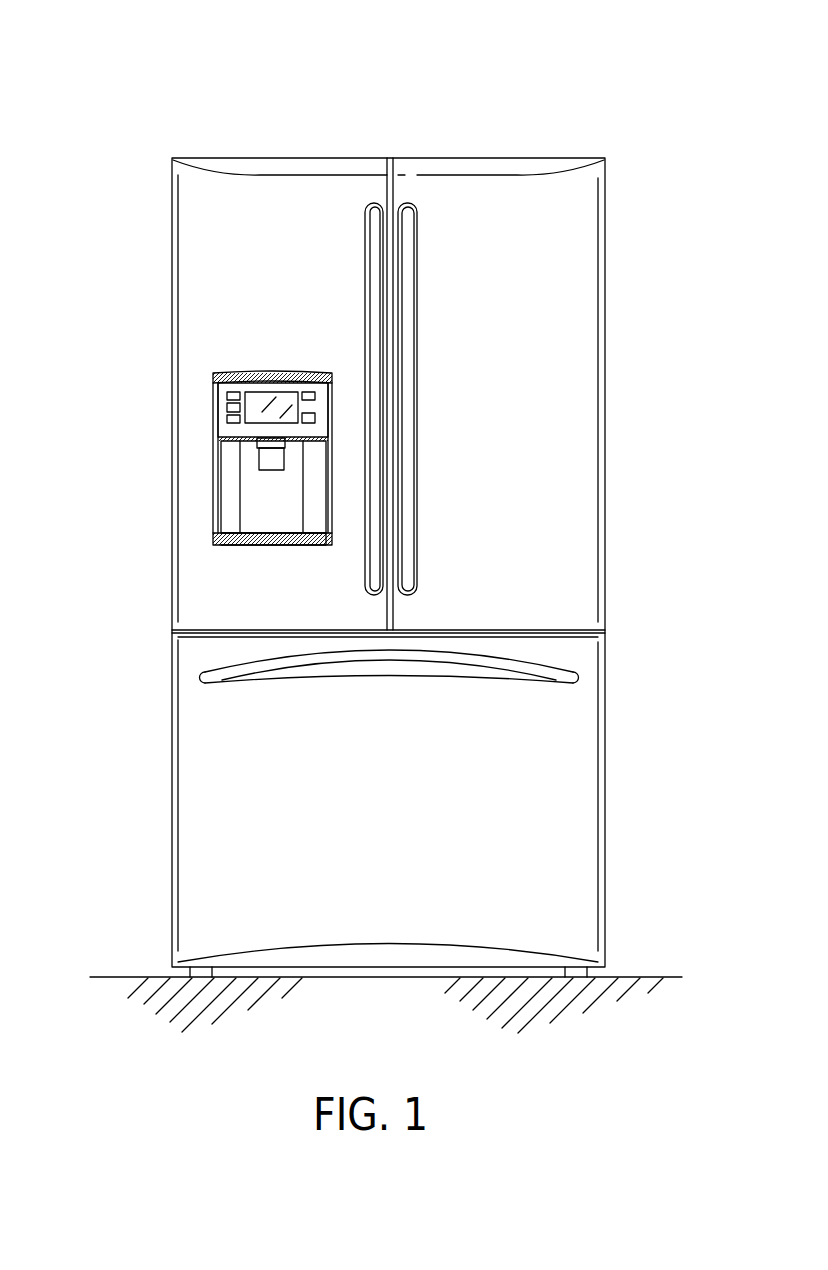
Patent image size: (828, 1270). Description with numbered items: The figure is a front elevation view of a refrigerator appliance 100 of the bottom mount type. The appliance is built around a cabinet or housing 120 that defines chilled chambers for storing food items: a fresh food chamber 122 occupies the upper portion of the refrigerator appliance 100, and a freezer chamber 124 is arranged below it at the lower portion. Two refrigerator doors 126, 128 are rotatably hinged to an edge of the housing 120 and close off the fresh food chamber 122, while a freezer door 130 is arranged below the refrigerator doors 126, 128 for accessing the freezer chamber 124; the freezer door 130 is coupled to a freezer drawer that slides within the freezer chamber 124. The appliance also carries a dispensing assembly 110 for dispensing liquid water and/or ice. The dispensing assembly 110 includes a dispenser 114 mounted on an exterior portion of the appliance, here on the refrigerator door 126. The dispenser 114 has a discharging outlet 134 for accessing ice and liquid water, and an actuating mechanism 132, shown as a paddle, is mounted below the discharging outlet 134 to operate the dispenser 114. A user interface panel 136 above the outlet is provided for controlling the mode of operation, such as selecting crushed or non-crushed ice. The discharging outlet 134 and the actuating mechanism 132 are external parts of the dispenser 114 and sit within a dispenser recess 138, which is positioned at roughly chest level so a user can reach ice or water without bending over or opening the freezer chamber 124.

The refrigerator appliance 100 is at (591, 80).
The dispensing assembly 110 is at (233, 355).
The dispenser 114 is at (268, 500).
The cabinet or housing 120 is at (170, 810).
The fresh food chamber 122 is at (567, 398).
The freezer chamber 124 is at (570, 750).
The refrigerator door 126 is at (198, 248).
The refrigerator door 128 is at (583, 288).
The freezer door 130 is at (577, 848).
The actuating mechanism 132 is at (268, 452).
The discharging outlet 134 is at (263, 470).
The user interface panel 136 is at (222, 403).
The dispenser recess 138 is at (287, 523).